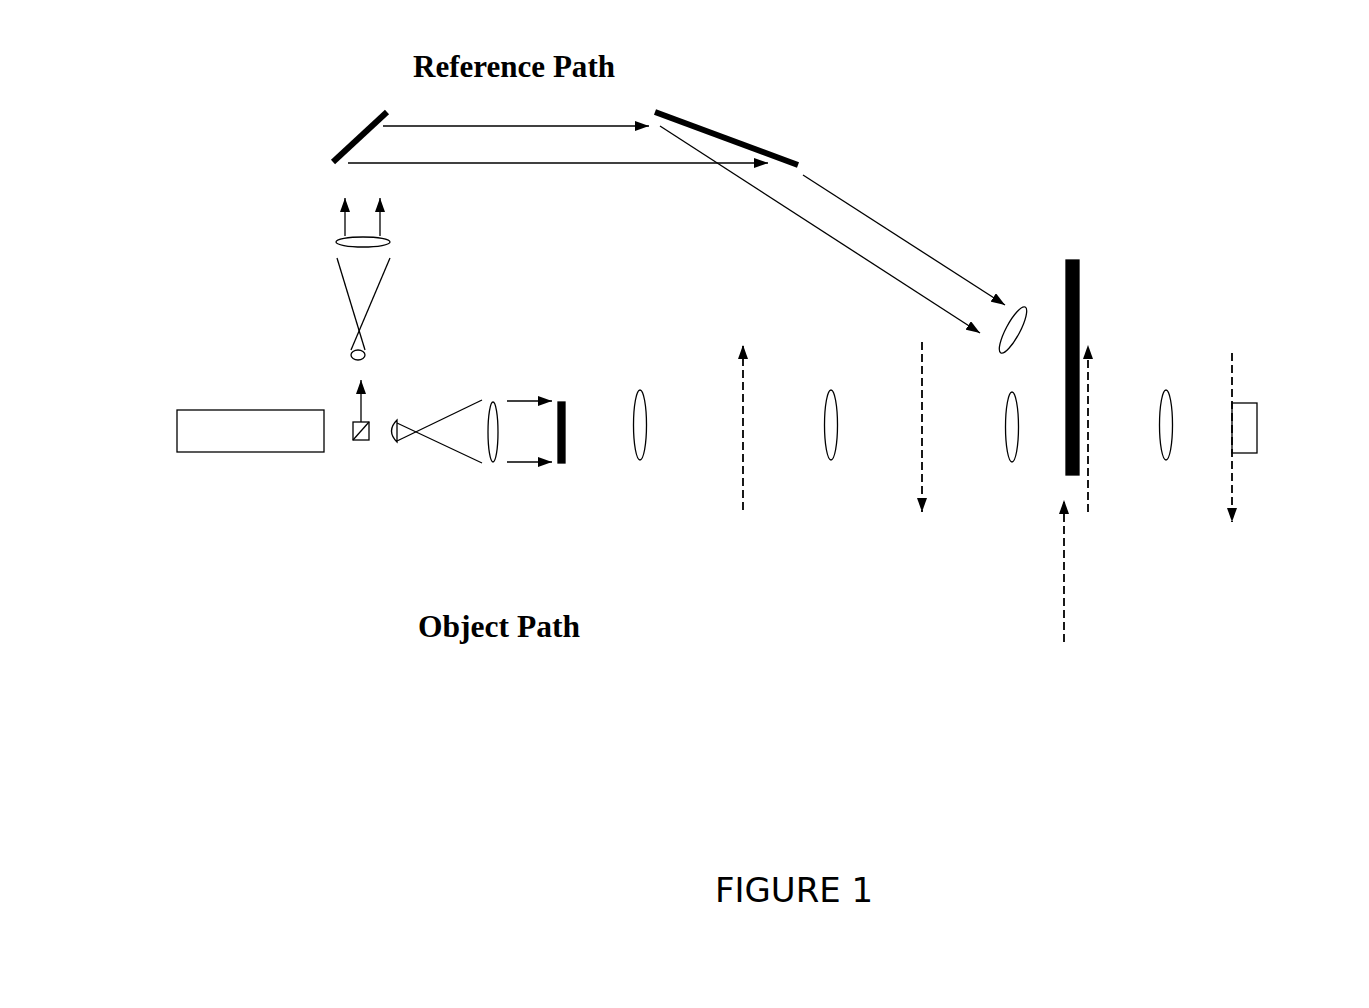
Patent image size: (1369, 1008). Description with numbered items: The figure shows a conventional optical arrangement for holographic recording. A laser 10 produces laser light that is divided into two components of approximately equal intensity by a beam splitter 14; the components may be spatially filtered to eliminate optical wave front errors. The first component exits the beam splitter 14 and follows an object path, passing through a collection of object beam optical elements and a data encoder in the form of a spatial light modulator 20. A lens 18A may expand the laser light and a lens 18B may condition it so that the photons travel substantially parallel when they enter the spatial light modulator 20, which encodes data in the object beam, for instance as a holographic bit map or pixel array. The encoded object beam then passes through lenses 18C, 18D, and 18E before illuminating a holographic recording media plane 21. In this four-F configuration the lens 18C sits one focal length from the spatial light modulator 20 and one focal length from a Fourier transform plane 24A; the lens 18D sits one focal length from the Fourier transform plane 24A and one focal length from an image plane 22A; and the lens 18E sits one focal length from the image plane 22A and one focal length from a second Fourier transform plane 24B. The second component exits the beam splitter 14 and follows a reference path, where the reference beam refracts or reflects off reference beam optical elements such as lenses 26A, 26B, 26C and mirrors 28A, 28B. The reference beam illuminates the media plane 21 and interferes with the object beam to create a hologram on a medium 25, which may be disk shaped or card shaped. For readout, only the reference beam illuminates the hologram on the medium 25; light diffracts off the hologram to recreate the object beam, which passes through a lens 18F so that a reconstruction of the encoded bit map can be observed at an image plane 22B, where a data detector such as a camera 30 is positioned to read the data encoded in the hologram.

The laser 10 is at (250, 431).
The beam splitter 14 is at (358, 442).
The lens 18A is at (392, 425).
The lens 18B is at (493, 402).
The lens 18C is at (640, 460).
The lens 18D is at (831, 460).
The lens 18E is at (1012, 463).
The lens 18F is at (1166, 461).
The spatial light modulator 20 is at (562, 465).
The holographic recording media plane 21 is at (1061, 619).
The image plane 22A is at (921, 480).
The image plane 22B is at (1231, 486).
The Fourier transform plane 24A is at (748, 397).
The Fourier transform plane 24B is at (1146, 396).
The medium 25 is at (1070, 258).
The lens 26A is at (365, 354).
The lens 26B is at (392, 241).
The lens 26C is at (1022, 306).
The mirror 28A is at (357, 139).
The mirror 28B is at (718, 128).
The camera 30 is at (1306, 451).